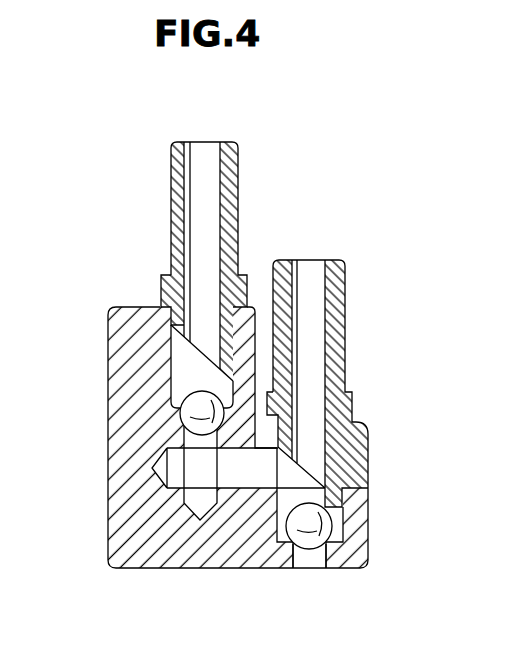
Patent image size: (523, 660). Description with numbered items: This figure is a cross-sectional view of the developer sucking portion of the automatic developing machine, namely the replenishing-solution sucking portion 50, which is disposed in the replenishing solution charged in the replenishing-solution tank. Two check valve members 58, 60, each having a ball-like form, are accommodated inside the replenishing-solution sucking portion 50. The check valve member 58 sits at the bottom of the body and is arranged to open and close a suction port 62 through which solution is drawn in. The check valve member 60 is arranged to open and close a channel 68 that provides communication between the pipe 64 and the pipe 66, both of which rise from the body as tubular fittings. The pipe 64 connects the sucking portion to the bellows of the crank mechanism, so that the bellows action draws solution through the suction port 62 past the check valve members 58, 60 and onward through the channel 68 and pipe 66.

The replenishing-solution sucking portion 50 is at (142, 572).
The check valve member 58 is at (296, 532).
The check valve member 60 is at (190, 412).
The suction port 62 is at (314, 550).
The pipe 64 is at (345, 328).
The pipe 66 is at (238, 176).
The channel 68 is at (240, 484).